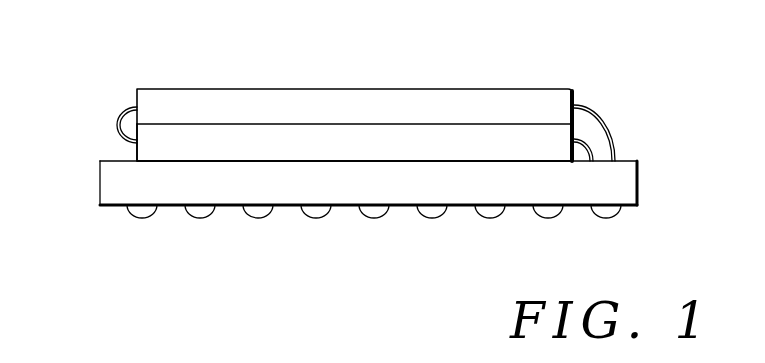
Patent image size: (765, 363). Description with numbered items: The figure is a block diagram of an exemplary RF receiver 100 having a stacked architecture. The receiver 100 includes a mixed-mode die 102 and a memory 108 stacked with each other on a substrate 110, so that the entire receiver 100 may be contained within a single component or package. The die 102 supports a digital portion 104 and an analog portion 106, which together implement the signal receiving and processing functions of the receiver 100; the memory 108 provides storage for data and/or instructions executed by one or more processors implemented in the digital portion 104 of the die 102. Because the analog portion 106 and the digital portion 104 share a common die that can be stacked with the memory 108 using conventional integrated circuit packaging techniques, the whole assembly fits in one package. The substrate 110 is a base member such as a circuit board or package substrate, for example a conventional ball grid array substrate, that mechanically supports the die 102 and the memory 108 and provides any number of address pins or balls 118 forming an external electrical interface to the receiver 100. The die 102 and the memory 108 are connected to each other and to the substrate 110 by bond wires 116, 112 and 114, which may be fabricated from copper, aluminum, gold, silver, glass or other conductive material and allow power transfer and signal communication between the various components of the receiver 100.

The receiver 100 is at (550, 72).
The mixed-mode die 102 is at (92, 124).
The digital portion 104 is at (207, 142).
The analog portion 106 is at (399, 138).
The memory 108 is at (316, 98).
The substrate 110 is at (623, 189).
The bond wire 112 is at (592, 141).
The bond wire 114 is at (593, 107).
The bond wire 116 is at (122, 113).
The balls 118 is at (143, 212).